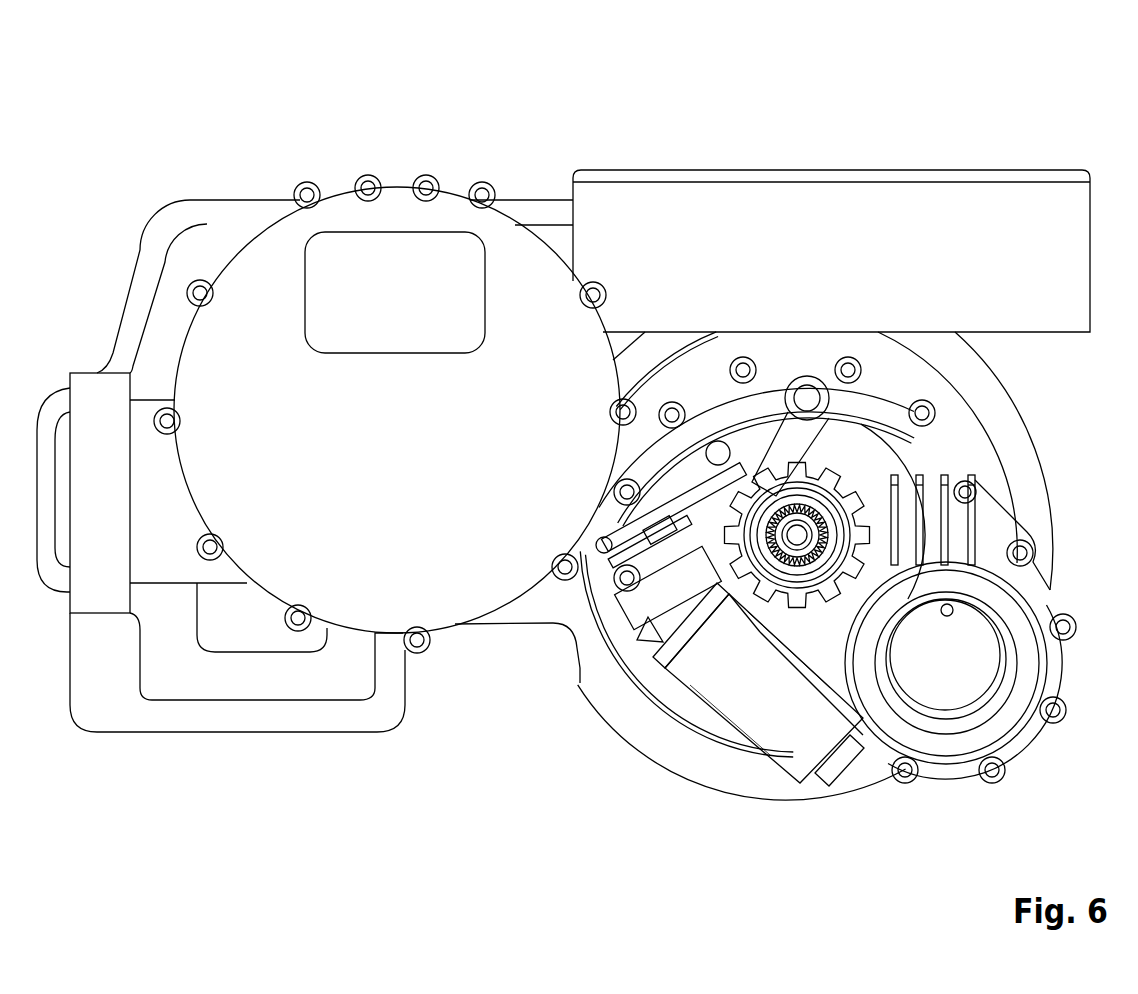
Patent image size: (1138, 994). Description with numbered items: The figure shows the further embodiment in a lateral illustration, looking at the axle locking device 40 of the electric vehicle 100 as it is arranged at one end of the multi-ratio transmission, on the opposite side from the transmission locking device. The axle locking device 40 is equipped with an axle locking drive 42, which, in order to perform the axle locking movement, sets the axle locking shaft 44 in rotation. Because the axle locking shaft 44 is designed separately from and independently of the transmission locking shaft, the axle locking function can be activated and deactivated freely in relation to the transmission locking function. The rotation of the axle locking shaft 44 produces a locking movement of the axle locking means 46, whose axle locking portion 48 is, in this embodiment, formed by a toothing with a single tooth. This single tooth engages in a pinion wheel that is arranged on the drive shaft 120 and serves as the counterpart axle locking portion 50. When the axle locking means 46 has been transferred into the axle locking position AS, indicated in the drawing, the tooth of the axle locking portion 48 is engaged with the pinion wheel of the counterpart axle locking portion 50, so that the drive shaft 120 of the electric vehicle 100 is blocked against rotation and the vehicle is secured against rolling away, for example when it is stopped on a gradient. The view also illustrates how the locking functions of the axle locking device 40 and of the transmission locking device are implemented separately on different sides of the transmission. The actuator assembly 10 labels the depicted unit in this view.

The electric vehicle 100 is at (455, 98).
The actuator assembly 10 is at (678, 833).
The axle locking device 40 is at (683, 692).
The axle locking drive 42 is at (740, 700).
The axle locking shaft 44 is at (717, 455).
The axle locking position AS is at (733, 437).
The axle locking means 46 is at (782, 420).
The axle locking portion 48 is at (748, 477).
The counterpart axle locking portion 50 is at (845, 457).
The drive shaft 120 is at (787, 550).